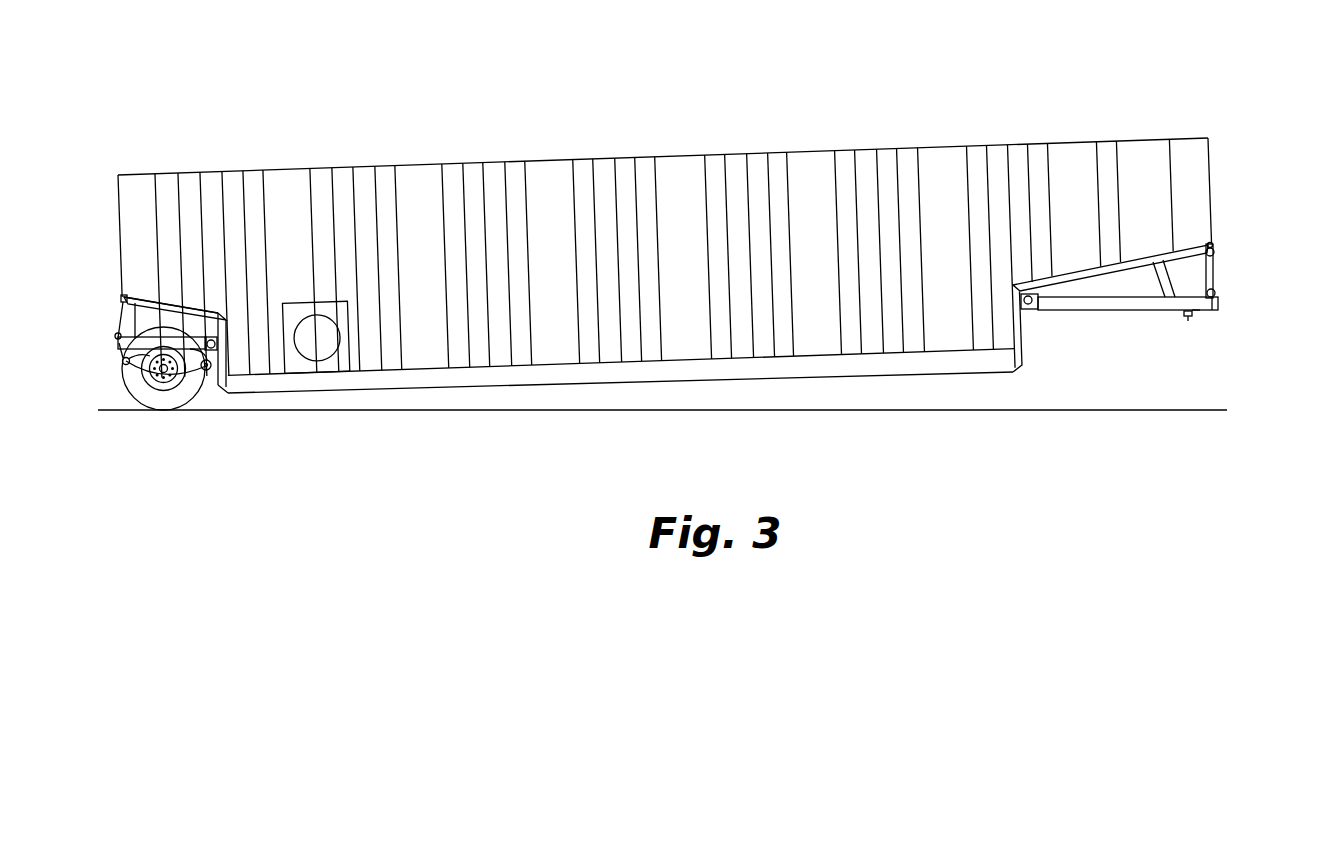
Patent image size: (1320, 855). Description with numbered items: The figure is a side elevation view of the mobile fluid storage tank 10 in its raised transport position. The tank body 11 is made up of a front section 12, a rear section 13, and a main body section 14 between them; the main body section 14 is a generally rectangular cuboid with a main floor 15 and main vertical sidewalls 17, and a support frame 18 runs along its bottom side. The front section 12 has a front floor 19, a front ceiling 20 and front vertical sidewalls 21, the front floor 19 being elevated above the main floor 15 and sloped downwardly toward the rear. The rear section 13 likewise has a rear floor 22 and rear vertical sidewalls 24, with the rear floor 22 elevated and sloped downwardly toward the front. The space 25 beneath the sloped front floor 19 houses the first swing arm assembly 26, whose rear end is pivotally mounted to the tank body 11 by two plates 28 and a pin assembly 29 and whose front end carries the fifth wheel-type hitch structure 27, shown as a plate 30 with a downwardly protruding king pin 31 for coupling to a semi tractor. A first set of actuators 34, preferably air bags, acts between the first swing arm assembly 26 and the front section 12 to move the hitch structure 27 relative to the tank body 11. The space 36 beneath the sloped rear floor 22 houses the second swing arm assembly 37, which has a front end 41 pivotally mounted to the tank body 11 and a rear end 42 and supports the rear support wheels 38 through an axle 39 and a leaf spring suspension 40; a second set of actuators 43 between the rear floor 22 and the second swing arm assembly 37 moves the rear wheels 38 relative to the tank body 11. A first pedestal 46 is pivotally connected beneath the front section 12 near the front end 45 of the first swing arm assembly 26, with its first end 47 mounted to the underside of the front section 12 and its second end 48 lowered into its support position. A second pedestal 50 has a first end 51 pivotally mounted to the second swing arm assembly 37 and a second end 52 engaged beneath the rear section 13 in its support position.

The mobile fluid storage tank 10 is at (543, 160).
The tank body 11 is at (735, 162).
The front section 12 is at (1113, 178).
The rear section 13 is at (167, 215).
The main body section 14 is at (402, 213).
The main floor 15 is at (523, 368).
The main vertical sidewalls 17 is at (630, 215).
The support frame 18 is at (775, 372).
The front floor 19 is at (1188, 250).
The front ceiling 20 is at (1028, 147).
The front vertical sidewalls 21 is at (1073, 180).
The rear floor 22 is at (152, 297).
The rear vertical sidewalls 24 is at (195, 215).
The space beneath the sloped front floor 25 is at (1135, 280).
The first swing arm assembly 26 is at (1107, 307).
The hitch structure 27 is at (1188, 320).
The plates 28 is at (1028, 313).
The pin assembly 29 is at (1037, 313).
The plate 30 is at (1197, 313).
The king pin 31 is at (1183, 317).
The first set of actuators 34 is at (1165, 275).
The space beneath the sloped rear floor 36 is at (168, 315).
The second swing arm assembly 37 is at (148, 352).
The rear support wheels 38 is at (187, 390).
The axle 39 is at (164, 376).
The leaf spring suspension 40 is at (143, 373).
The front end 41 is at (210, 372).
The rear end 42 is at (124, 364).
The second set of actuators 43 is at (132, 317).
The front end 45 is at (1217, 305).
The first pedestal 46 is at (1215, 272).
The first end 47 is at (1213, 253).
The second end 48 is at (1217, 293).
The second pedestal 50 is at (117, 322).
The first end 51 is at (147, 342).
The second end 52 is at (122, 298).